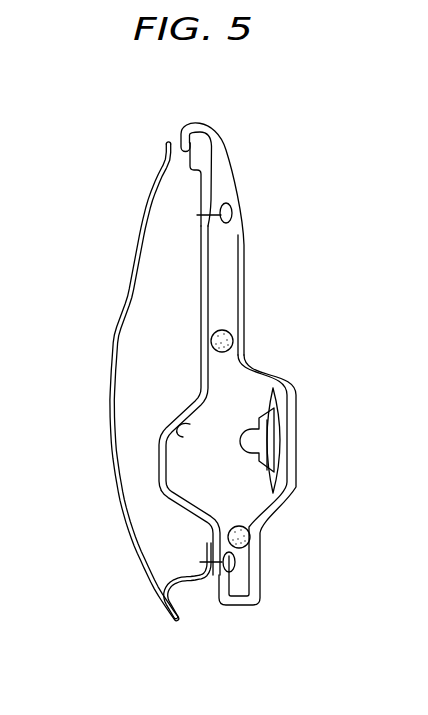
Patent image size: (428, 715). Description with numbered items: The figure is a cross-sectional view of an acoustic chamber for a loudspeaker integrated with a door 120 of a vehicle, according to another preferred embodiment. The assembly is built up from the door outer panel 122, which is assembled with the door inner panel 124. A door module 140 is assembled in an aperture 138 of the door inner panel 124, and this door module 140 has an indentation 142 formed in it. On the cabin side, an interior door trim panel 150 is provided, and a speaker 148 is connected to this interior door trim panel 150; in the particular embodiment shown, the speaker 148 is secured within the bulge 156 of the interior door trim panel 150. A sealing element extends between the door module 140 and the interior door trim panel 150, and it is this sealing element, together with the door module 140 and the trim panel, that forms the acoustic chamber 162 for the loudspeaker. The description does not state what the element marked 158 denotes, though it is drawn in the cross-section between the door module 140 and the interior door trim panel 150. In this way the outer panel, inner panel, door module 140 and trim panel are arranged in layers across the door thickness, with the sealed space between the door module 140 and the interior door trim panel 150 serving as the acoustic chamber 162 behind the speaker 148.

The door 120 is at (170, 124).
The door outer panel 122 is at (125, 277).
The door inner panel 124 is at (203, 584).
The aperture 138 is at (198, 531).
The door module 140 is at (199, 287).
The indentation 142 is at (190, 424).
The speaker 148 is at (265, 442).
The interior door trim panel 150 is at (246, 260).
The bulge 156 is at (297, 404).
The seal member 158 is at (232, 339).
The acoustic chamber 162 is at (192, 448).